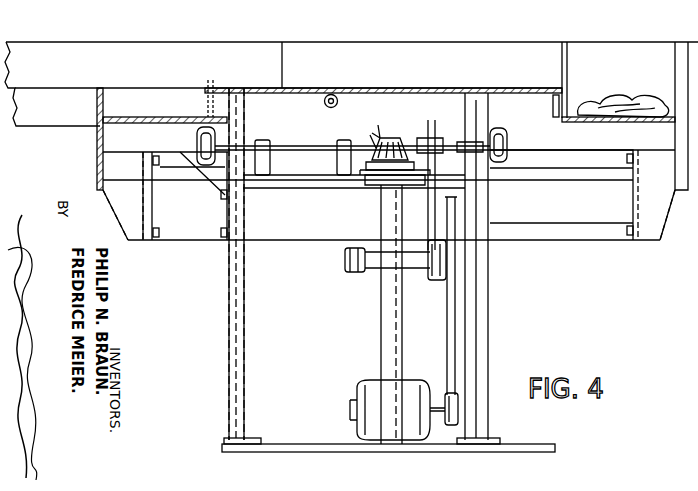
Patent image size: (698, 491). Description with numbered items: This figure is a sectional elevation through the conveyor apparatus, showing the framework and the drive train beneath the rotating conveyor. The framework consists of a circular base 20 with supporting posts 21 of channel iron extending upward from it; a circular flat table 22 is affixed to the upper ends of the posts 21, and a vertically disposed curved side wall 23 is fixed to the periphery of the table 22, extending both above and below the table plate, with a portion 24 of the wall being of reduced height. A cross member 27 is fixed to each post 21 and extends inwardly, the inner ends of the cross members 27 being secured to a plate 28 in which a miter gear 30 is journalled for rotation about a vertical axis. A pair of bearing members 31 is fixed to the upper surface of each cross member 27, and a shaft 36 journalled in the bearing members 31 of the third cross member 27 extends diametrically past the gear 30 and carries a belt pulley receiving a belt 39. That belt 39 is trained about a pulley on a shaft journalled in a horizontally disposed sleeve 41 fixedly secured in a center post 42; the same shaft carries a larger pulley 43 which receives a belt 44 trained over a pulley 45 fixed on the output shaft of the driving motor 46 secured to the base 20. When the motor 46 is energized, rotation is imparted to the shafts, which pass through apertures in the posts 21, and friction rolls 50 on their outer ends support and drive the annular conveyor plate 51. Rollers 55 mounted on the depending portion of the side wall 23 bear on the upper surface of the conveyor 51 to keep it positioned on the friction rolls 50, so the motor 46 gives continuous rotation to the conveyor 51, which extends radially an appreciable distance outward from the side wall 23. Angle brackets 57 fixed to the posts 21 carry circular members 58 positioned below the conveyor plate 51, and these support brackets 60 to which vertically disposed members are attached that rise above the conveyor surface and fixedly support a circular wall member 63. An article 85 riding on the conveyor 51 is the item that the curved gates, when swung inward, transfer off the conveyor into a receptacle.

The circular base 20 is at (305, 444).
The supporting posts 21 is at (246, 322).
The circular flat table 22 is at (372, 88).
The curved side wall 23 is at (567, 63).
The portion of reduced height 24 is at (211, 80).
The cross member 27 is at (288, 178).
The plate 28 is at (372, 188).
The miter gear 30 is at (390, 147).
The bearing members 31 is at (337, 163).
The shaft 36 is at (280, 150).
The belt 39 is at (418, 185).
The horizontally disposed sleeve 41 is at (362, 274).
The center post 42 is at (380, 322).
The larger pulley 43 is at (443, 285).
The belt 44 is at (448, 339).
The pulley 45 is at (449, 393).
The driving motor 46 is at (370, 384).
The friction rolls 50 is at (197, 140).
The annular conveyor plate 51 is at (127, 118).
The rollers 55 is at (331, 94).
The angle brackets 57 is at (189, 196).
The circular members 58 is at (150, 152).
The brackets 60 is at (389, 195).
The circular wall member 63 is at (97, 104).
The article 85 is at (622, 98).